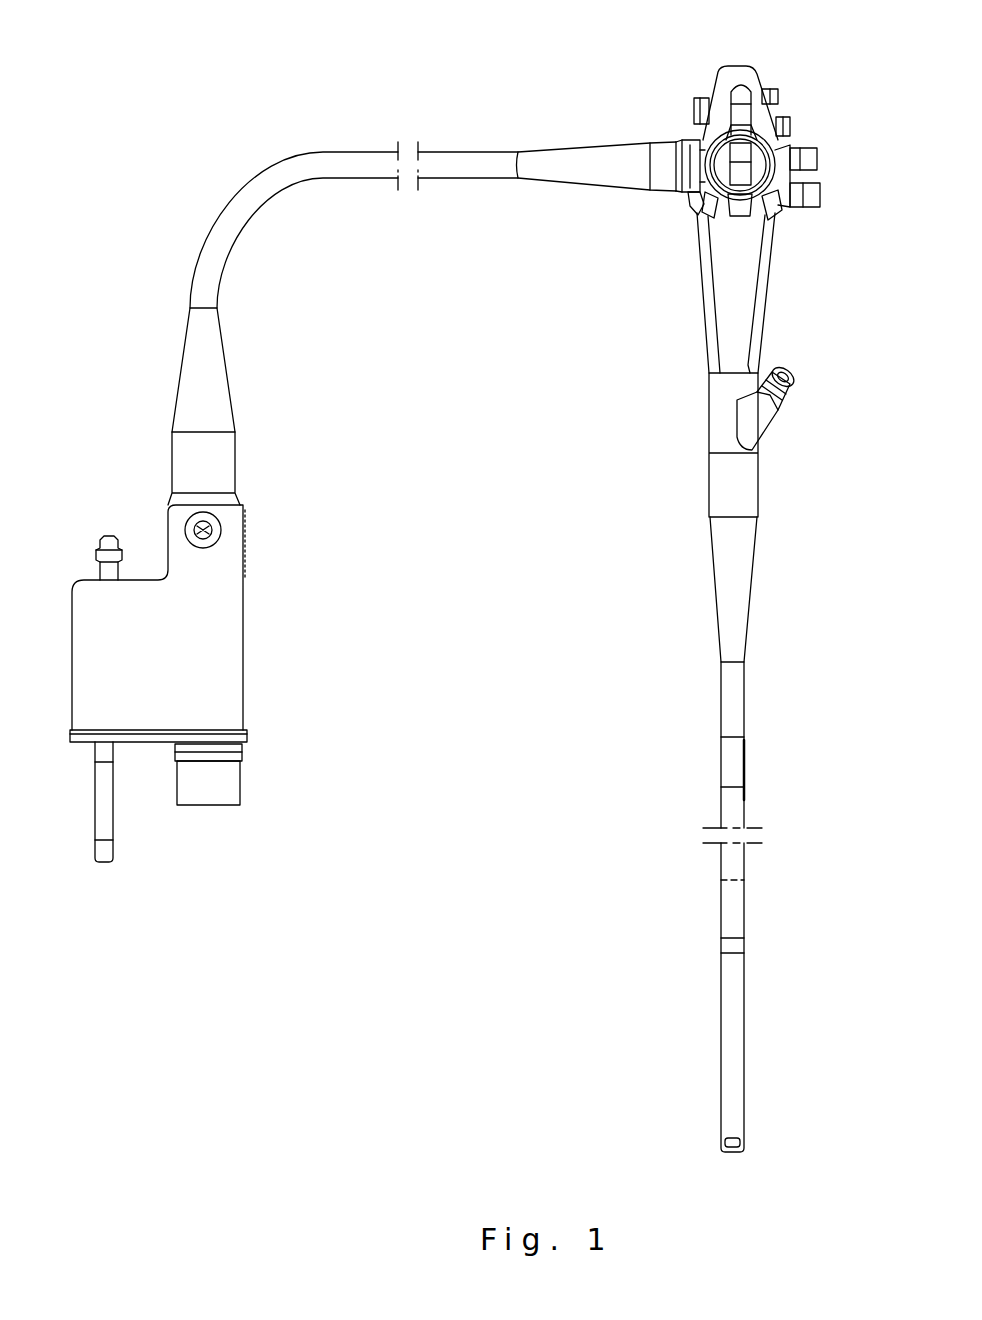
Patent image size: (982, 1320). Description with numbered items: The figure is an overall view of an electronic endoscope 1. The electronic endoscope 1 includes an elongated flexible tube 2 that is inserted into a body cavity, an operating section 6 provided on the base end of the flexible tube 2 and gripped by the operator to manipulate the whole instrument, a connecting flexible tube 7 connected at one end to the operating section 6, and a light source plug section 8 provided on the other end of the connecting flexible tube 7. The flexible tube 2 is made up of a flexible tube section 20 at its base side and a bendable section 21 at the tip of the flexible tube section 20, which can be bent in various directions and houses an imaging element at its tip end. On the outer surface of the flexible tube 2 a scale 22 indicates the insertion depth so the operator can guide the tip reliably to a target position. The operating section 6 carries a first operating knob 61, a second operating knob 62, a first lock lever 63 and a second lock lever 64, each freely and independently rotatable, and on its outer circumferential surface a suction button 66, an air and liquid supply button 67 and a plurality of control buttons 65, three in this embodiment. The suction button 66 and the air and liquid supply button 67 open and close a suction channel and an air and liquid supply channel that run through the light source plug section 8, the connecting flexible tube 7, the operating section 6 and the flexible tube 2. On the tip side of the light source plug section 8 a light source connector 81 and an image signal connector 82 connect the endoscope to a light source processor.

The electronic endoscope 1 is at (542, 104).
The flexible tube 2 is at (748, 748).
The operating section 6 is at (745, 304).
The connecting flexible tube 7 is at (364, 150).
The light source plug section 8 is at (205, 638).
The flexible tube section 20 is at (722, 706).
The bendable section 21 is at (728, 1015).
The scale 22 is at (715, 778).
The first operating knob 61 is at (692, 150).
The second operating knob 62 is at (686, 185).
The first lock lever 63 is at (740, 83).
The second lock lever 64 is at (762, 195).
The control buttons 65 is at (700, 105).
The suction button 66 is at (818, 157).
The air and liquid supply button 67 is at (822, 194).
The light source connector 81 is at (108, 828).
The image signal connector 82 is at (228, 778).